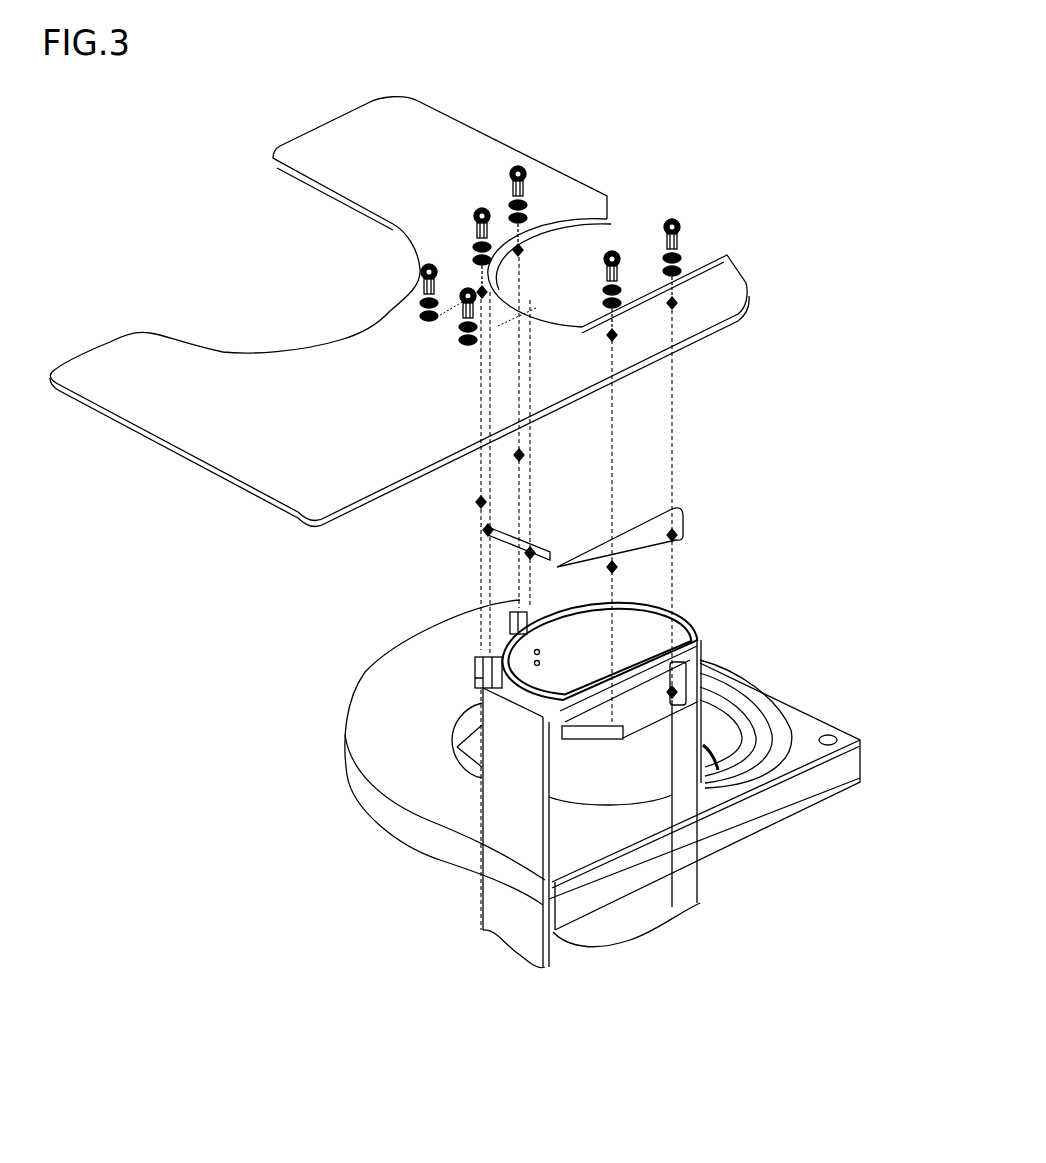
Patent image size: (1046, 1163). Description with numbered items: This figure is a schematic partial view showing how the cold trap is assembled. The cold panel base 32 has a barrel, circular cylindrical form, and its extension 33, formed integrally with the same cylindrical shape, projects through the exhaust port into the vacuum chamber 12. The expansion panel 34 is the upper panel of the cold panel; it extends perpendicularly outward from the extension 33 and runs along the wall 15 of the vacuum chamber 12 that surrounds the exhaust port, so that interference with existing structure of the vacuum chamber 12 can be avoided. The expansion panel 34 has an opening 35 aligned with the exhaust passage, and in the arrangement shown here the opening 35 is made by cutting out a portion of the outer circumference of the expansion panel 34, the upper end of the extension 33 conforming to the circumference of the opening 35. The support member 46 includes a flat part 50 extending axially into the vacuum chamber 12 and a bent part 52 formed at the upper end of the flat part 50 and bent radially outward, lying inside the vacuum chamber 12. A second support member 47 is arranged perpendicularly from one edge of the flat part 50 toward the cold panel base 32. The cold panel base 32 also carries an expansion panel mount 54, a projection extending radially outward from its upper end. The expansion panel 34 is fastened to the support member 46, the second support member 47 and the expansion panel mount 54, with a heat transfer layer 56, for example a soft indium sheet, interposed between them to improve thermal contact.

The expansion panel 34 is at (453, 135).
The opening 35 is at (560, 238).
The heat transfer layer 56 is at (480, 502).
The expansion panel mount 54 is at (478, 675).
The cold panel base 32 is at (690, 890).
The support member 46 is at (684, 671).
The bent part 52 is at (683, 672).
The flat part 50 is at (690, 716).
The extension 33 is at (683, 742).
The second support member 47 is at (505, 752).
The vacuum chamber 12 is at (816, 788).
The wall 15 is at (613, 765).